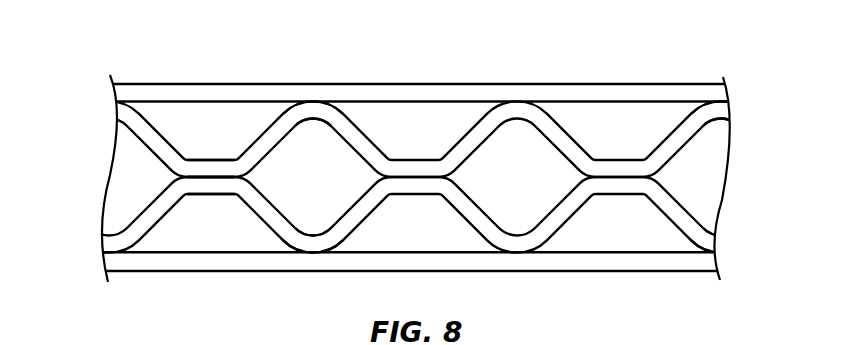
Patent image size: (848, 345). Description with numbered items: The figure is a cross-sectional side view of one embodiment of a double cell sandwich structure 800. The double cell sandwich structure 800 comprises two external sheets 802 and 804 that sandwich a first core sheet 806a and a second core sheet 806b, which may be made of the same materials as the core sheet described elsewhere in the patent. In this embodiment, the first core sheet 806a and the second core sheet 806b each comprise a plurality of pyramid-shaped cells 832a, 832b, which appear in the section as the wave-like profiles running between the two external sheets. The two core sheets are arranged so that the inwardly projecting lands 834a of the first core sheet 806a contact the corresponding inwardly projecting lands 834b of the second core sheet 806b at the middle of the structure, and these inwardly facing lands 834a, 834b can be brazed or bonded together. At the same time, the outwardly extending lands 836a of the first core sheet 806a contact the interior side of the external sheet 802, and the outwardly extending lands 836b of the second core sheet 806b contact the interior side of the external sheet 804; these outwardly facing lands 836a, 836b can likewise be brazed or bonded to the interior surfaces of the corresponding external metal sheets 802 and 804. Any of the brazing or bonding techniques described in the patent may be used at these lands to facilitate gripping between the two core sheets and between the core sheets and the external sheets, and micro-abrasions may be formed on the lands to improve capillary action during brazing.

The double cell sandwich structure 800 is at (621, 39).
The external sheet 802 is at (662, 84).
The external sheet 804 is at (662, 271).
The first core sheet 806a is at (695, 137).
The second core sheet 806b is at (693, 215).
The pyramid-shaped cells 832a is at (187, 110).
The pyramid-shaped cells 832b is at (187, 242).
The inwardly projecting lands 834a is at (213, 157).
The inwardly projecting lands 834b is at (213, 194).
The outwardly extending lands 836a is at (315, 107).
The outwardly extending lands 836b is at (315, 247).